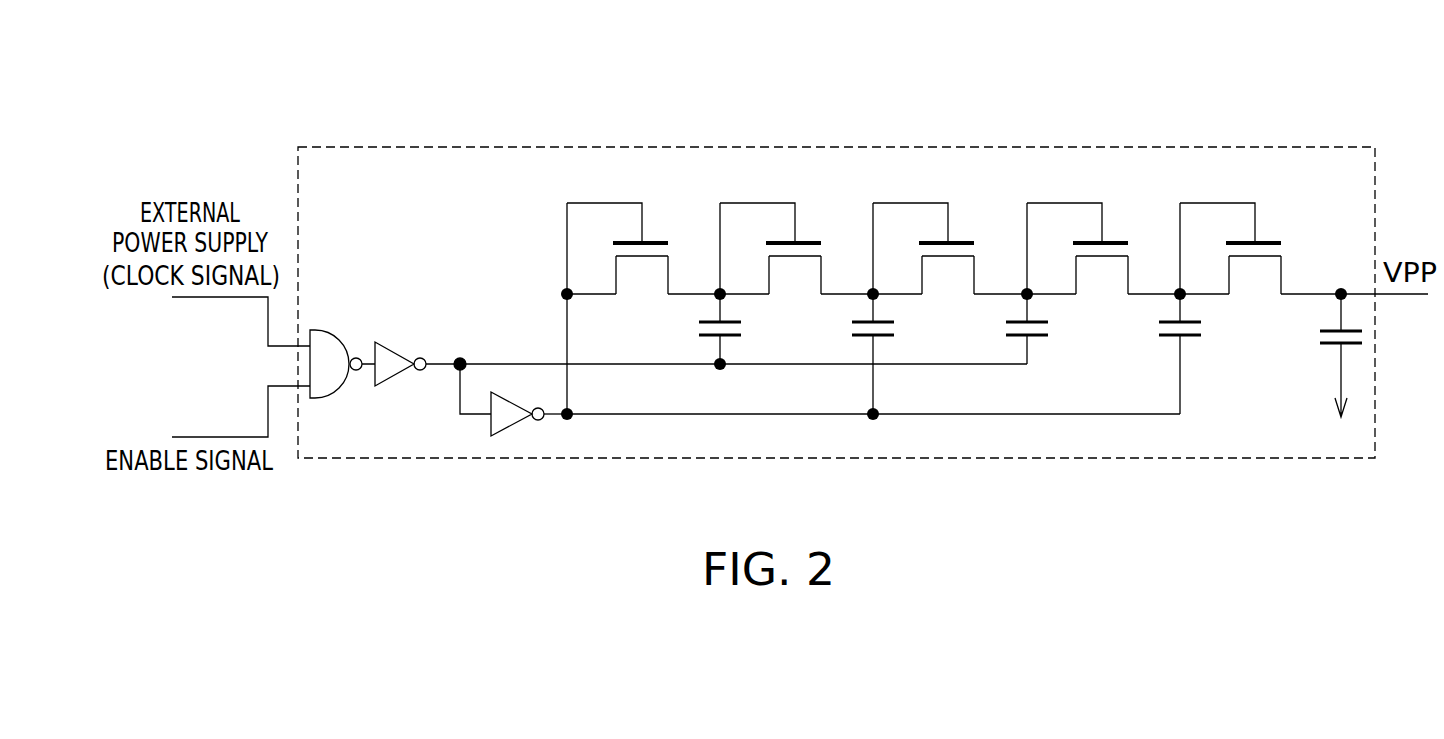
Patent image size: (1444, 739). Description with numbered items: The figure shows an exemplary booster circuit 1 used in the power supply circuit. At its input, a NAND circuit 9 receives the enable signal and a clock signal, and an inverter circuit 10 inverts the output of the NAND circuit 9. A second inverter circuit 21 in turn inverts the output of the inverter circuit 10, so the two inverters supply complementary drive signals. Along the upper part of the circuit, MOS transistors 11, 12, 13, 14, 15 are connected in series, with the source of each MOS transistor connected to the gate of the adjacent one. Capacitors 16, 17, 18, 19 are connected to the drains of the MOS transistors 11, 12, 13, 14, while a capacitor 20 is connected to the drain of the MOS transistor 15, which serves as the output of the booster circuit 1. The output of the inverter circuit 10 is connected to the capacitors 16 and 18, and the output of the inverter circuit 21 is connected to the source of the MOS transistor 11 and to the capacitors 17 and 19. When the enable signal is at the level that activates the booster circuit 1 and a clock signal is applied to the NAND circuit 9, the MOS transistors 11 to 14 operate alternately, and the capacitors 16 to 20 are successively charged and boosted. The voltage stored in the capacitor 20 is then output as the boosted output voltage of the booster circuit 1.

The booster circuit 1 is at (1043, 147).
The NAND circuit 9 is at (325, 400).
The inverter circuit 10 is at (398, 384).
The MOS transistor 11 is at (660, 243).
The MOS transistor 12 is at (813, 243).
The MOS transistor 13 is at (965, 243).
The MOS transistor 14 is at (1119, 243).
The MOS transistor 15 is at (1272, 243).
The capacitor 16 is at (699, 320).
The capacitor 17 is at (852, 320).
The capacitor 18 is at (1006, 320).
The capacitor 19 is at (1159, 320).
The capacitor 20 is at (1320, 326).
The inverter circuit 21 is at (512, 430).